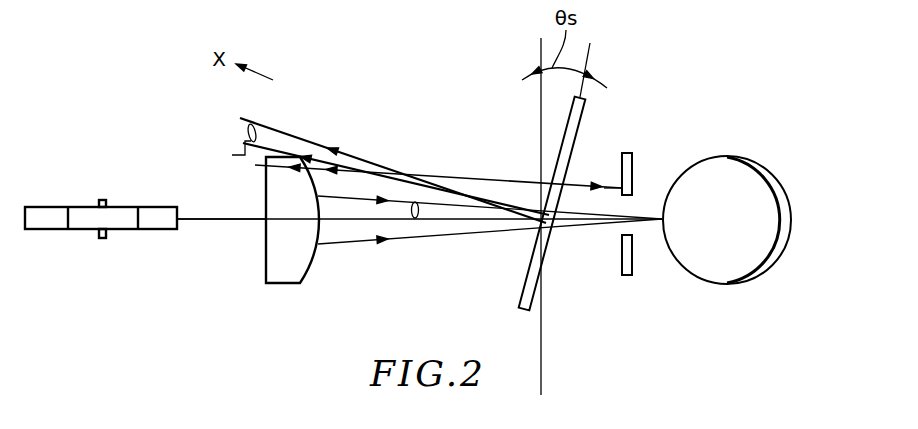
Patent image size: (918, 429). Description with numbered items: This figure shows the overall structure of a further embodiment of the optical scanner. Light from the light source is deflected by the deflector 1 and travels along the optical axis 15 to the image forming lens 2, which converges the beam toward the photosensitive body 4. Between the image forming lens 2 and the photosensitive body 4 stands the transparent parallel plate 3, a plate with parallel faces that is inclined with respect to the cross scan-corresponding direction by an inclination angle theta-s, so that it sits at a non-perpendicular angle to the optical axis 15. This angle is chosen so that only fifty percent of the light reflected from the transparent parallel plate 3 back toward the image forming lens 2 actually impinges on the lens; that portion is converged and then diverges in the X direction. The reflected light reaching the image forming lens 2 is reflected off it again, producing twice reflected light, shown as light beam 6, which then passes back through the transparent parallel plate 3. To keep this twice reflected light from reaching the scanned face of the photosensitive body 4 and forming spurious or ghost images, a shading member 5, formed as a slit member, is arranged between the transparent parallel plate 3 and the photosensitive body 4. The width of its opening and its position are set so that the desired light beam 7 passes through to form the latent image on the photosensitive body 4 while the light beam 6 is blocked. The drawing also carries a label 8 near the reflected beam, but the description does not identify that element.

The deflector 1 is at (155, 207).
The optical axis 15 is at (217, 219).
The image forming lens 2 is at (293, 285).
The transparent parallel plate 3 is at (582, 116).
The photosensitive body 4 is at (745, 163).
The shading member 5 is at (632, 170).
The light beam (twice reflected light) 6 is at (613, 187).
The light beam (desired light) 7 is at (419, 222).
The reflected beam cross section 8 is at (270, 136).